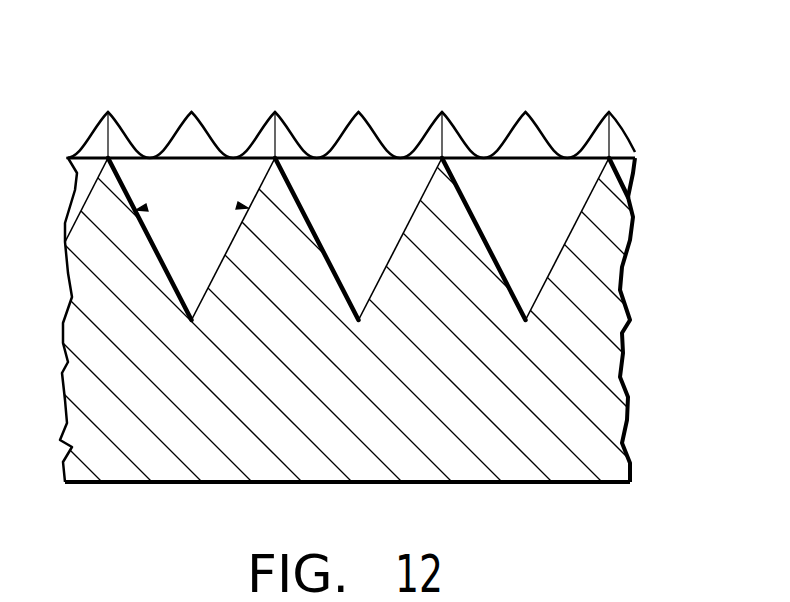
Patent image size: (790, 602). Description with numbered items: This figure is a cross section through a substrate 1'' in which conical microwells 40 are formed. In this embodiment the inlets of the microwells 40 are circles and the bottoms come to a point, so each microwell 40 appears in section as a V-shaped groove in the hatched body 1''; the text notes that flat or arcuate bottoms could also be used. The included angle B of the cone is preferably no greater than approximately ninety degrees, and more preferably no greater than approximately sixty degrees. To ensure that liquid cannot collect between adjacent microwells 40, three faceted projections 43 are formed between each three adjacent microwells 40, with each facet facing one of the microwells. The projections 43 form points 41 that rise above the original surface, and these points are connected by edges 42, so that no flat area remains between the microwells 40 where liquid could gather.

The sheet material body 1'' is at (390, 320).
The conical microwells 40 is at (345, 221).
The raised tips of ridges 41 is at (358, 112).
The edges 42 is at (283, 128).
The faceted projections 43 is at (275, 112).
The included angle B is at (239, 206).